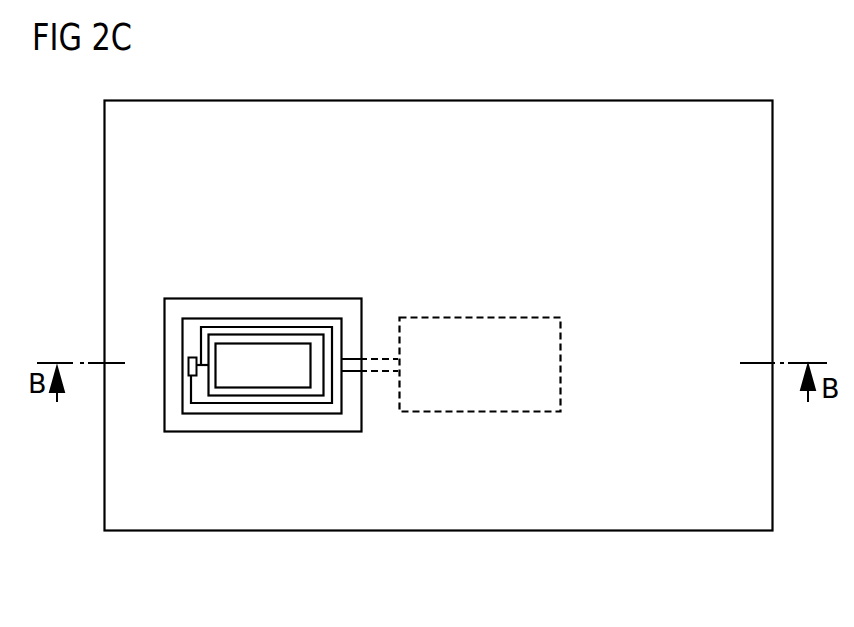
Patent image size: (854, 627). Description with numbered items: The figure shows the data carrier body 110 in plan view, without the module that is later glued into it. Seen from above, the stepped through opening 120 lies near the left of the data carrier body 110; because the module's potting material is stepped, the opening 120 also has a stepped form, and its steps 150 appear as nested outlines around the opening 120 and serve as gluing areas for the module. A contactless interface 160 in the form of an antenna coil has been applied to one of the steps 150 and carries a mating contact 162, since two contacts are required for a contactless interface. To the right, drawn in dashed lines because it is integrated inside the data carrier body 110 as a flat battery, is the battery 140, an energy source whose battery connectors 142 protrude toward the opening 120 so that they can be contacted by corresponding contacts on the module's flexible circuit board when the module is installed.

The data carrier body 110 is at (441, 108).
The through opening 120 is at (234, 351).
The battery 140 is at (480, 328).
The battery connectors 142 is at (351, 366).
The steps 150 is at (342, 307).
The contactless interface 160 is at (285, 323).
The mating contact 162 is at (187, 361).